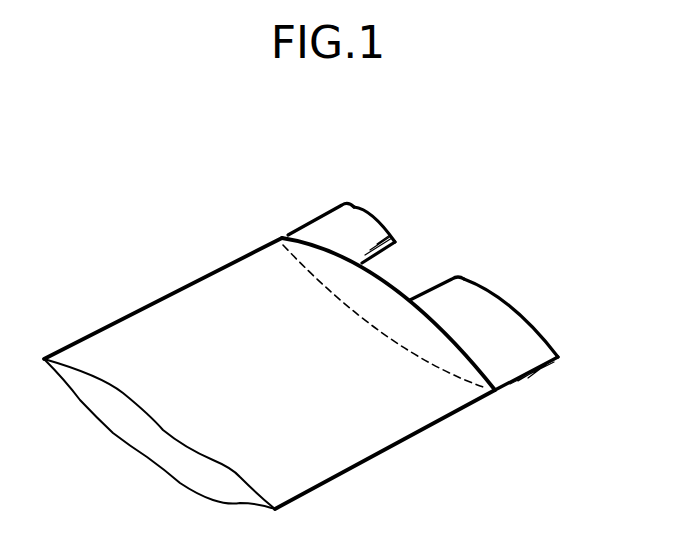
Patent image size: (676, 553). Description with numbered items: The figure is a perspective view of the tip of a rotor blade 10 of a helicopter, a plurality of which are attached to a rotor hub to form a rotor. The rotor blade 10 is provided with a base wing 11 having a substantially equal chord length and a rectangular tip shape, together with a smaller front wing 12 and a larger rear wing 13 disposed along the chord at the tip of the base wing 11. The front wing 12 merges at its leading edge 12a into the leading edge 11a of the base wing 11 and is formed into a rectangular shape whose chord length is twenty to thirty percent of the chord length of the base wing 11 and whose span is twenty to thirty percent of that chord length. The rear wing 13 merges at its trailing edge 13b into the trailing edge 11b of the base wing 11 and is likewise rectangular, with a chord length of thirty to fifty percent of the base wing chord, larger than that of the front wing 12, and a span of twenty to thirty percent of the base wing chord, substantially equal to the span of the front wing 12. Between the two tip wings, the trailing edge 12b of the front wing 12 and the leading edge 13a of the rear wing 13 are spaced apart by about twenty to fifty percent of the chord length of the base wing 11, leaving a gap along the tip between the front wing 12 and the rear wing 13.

The rotor blade 10 is at (115, 240).
The base wing 11 is at (180, 300).
The leading edge of the base wing 11a is at (240, 257).
The trailing edge of the base wing 11b is at (395, 447).
The front wing 12 is at (355, 230).
The leading edge of the front wing 12a is at (317, 212).
The trailing edge of the front wing 12b is at (393, 255).
The rear wing 13 is at (505, 322).
The leading edge of the rear wing 13a is at (448, 275).
The trailing edge of the rear wing 13b is at (537, 372).